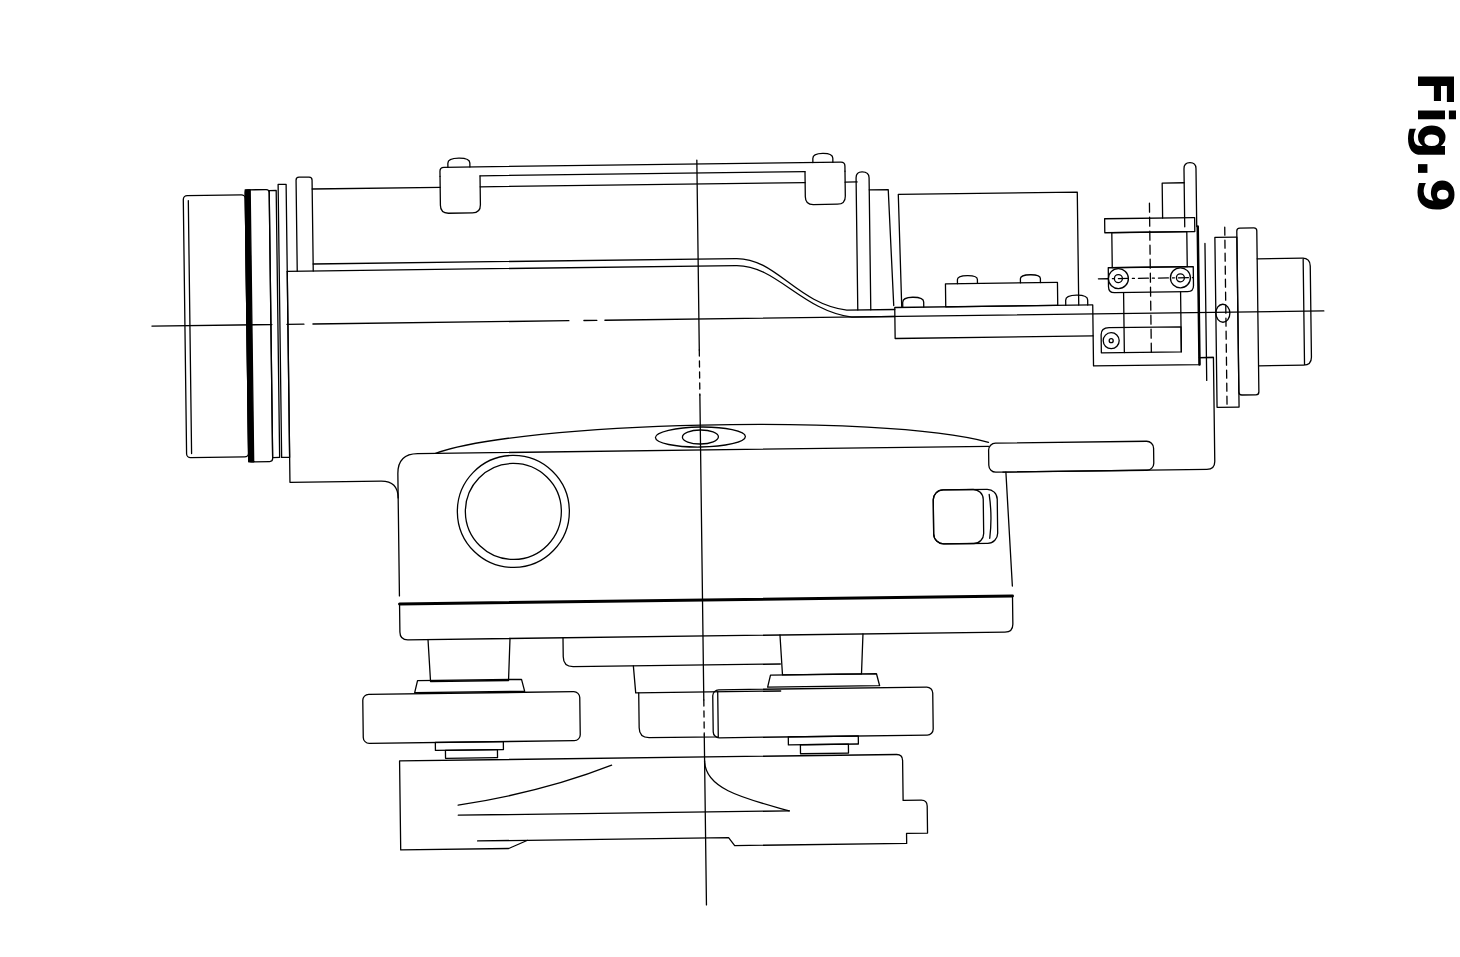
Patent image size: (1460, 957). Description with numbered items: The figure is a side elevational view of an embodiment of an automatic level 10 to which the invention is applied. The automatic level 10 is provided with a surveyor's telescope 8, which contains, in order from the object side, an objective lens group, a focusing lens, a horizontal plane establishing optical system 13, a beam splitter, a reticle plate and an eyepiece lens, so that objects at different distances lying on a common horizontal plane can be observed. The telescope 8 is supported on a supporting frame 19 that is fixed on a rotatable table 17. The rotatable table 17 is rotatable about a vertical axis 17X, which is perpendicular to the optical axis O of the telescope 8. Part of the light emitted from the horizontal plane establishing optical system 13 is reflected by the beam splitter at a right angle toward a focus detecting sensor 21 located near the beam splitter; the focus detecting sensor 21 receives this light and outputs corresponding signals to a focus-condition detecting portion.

The surveyor's telescope 8 is at (388, 206).
The automatic level 10 is at (878, 134).
The horizontal plane establishing optical system 13 is at (989, 223).
The rotatable table 17 is at (845, 799).
The vertical axis 17X is at (702, 396).
The supporting frame 19 is at (356, 449).
The focus detecting sensor 21 is at (1139, 341).
The optical axis O is at (217, 323).